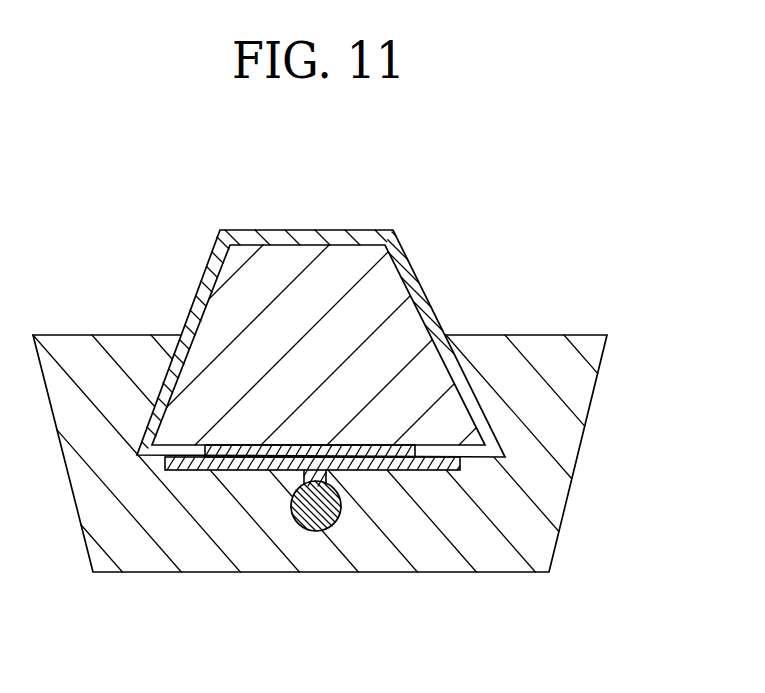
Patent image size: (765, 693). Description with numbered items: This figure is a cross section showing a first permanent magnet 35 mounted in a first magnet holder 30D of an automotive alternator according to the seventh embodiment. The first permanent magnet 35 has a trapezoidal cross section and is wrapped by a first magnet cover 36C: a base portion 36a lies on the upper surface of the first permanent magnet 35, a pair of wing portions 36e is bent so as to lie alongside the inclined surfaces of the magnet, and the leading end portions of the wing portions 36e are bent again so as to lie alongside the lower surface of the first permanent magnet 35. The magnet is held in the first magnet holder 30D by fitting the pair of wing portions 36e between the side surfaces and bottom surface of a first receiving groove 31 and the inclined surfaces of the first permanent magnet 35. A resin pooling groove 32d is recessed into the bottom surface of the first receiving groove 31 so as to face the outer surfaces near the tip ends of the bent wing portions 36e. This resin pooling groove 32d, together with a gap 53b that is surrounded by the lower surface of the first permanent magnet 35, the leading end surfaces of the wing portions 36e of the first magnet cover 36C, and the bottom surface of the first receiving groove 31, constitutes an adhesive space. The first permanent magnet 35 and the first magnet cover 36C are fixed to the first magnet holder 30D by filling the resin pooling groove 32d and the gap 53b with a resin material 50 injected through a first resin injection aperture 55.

The first magnet holder 30D is at (568, 337).
The first receiving groove 31 is at (460, 355).
The first permanent magnet 35 is at (383, 283).
The base portion 36a is at (275, 237).
The first magnet cover 36C is at (338, 232).
The wing portions 36e is at (200, 292).
The resin pooling groove 32d is at (198, 470).
The gap 53b is at (265, 458).
The first resin injection aperture 55 is at (315, 533).
The resin material 50 is at (322, 500).